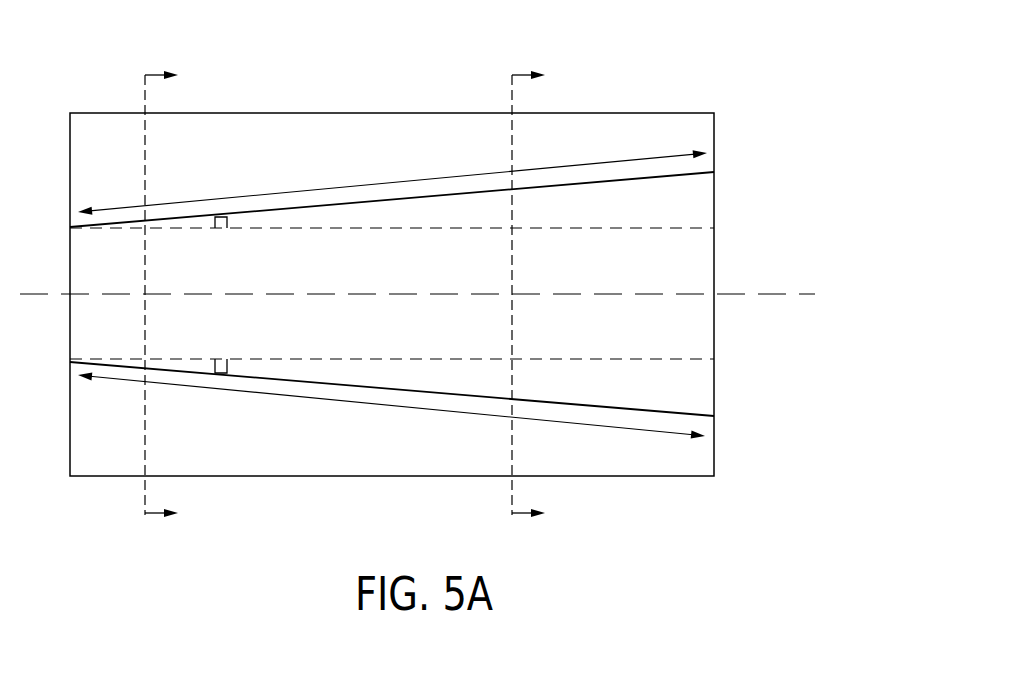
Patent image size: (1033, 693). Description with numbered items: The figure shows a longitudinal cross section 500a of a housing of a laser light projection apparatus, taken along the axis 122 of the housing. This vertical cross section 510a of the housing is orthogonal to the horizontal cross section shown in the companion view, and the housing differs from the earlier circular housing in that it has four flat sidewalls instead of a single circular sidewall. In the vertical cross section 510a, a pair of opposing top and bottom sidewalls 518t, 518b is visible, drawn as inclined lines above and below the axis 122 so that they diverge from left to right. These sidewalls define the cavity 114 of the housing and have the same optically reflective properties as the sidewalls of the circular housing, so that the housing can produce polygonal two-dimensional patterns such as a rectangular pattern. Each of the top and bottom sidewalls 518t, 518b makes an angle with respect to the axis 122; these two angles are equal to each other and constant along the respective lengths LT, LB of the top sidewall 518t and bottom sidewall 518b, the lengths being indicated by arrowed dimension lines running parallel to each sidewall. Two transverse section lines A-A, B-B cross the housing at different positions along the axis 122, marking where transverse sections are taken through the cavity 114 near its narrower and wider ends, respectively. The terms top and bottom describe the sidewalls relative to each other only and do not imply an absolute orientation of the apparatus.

The longitudinal cross section 500a is at (755, 58).
The vertical cross section of the housing 510a is at (131, 172).
The top sidewall 518t is at (367, 202).
The bottom sidewall 518b is at (367, 386).
The cavity 114 is at (688, 263).
The axis 122 is at (802, 293).
The length of the top sidewall LT is at (665, 155).
The length of the bottom sidewall LB is at (665, 433).
The section line A-A is at (171, 296).
The section line B-B is at (537, 296).